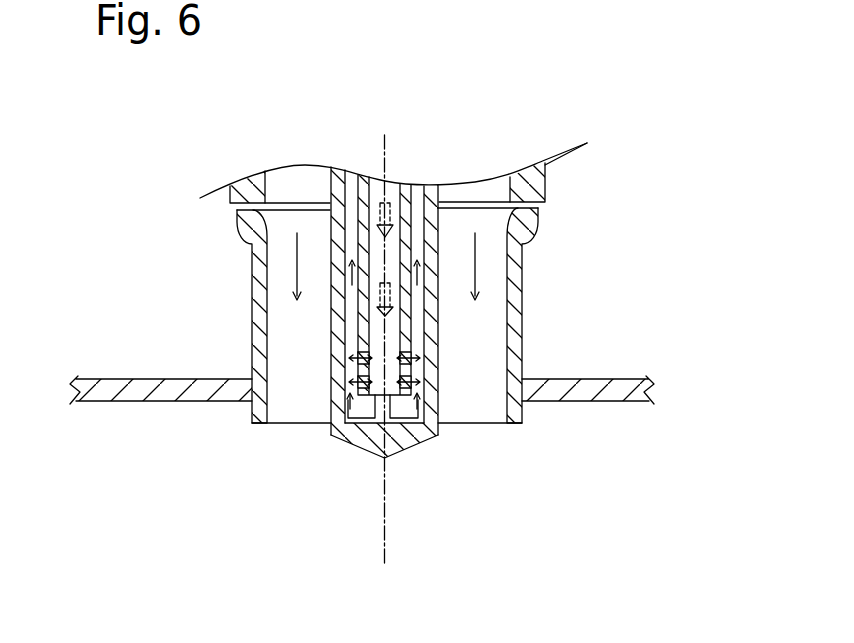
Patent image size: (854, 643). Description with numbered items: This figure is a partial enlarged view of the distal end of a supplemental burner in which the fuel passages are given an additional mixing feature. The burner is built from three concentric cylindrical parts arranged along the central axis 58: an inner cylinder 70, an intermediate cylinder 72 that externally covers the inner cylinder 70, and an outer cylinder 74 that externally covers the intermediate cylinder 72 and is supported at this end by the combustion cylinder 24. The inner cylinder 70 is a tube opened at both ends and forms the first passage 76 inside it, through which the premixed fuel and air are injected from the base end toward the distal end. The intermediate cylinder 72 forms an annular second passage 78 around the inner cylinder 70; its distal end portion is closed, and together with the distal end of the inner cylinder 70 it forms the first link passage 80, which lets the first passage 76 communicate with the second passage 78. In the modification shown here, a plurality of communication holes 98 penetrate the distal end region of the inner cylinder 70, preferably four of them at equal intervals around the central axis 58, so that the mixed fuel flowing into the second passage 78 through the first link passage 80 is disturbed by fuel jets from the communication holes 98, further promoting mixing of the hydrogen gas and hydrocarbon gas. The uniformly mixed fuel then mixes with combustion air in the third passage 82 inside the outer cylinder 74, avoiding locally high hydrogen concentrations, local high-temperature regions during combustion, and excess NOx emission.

The combustion cylinder 24 is at (602, 388).
The central axis 58 is at (380, 516).
The inner cylinder 70 is at (411, 355).
The intermediate cylinder 72 is at (430, 437).
The outer cylinder 74 is at (512, 313).
The first passage 76 is at (395, 185).
The second passage 78 is at (352, 187).
The first link passage 80 is at (362, 423).
The third passage 82 is at (288, 340).
The communication holes 98 is at (352, 380).